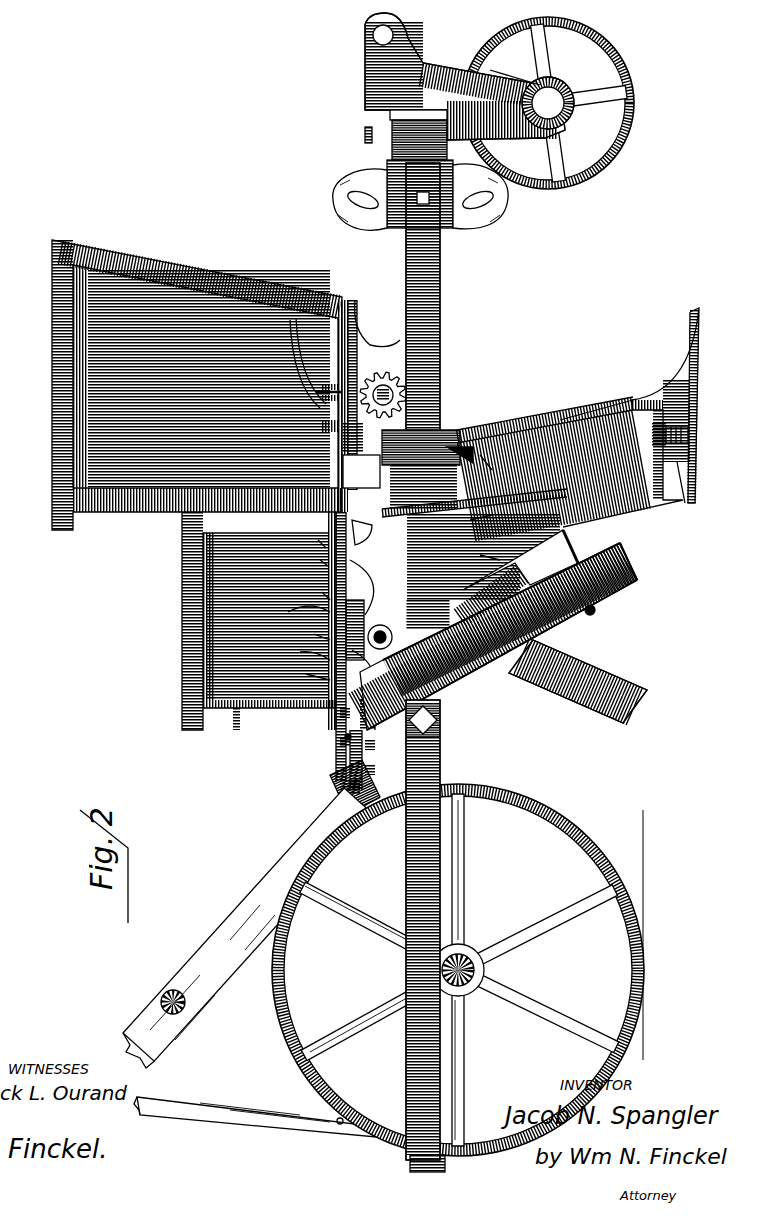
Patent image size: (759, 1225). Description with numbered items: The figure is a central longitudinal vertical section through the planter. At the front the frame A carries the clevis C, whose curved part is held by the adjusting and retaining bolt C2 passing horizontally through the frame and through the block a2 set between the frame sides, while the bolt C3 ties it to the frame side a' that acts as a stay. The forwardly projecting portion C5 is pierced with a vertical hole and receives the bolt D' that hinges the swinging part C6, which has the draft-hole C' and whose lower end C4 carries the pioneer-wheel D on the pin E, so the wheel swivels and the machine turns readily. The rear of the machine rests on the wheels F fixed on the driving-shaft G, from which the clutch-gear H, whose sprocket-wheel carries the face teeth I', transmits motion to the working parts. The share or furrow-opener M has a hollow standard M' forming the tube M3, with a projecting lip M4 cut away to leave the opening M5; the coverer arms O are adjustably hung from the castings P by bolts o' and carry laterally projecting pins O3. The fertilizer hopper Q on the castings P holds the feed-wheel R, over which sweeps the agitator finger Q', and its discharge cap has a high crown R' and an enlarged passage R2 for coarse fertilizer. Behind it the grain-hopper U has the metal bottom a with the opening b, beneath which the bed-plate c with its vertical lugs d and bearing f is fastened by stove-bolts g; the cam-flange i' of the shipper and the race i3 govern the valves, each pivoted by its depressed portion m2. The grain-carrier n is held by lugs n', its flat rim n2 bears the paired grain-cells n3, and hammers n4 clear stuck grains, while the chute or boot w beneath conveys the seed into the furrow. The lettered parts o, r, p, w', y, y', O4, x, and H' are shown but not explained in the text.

The fertilizer hopper Q is at (200, 385).
The agitator finger Q' is at (289, 363).
The bolts o' is at (321, 363).
The feed-wheel R is at (313, 431).
The crown of cap R' is at (307, 405).
The passage of cap R2 is at (320, 388).
The grain-hopper U is at (247, 621).
The grain-carrier n is at (309, 678).
The lugs of grain-carrier n' is at (307, 658).
The rim of grain-carrier n2 is at (313, 637).
The grain-cells n3 is at (315, 564).
The hammers n4 is at (309, 546).
The link y is at (300, 615).
The link pin y' is at (317, 597).
The castings P is at (356, 300).
The teeth of sprocket-wheel I' is at (377, 323).
The bottom of grain-hopper a is at (357, 472).
The bed-plate c is at (356, 591).
The crank disk o is at (377, 589).
The connecting rod r is at (365, 630).
The bracket p is at (350, 740).
The opening in bottom b is at (345, 736).
The clamp plate w' is at (307, 718).
The side of frame a' is at (326, 739).
The race of segment i3 is at (364, 746).
The cam-flange of shipper i' is at (338, 771).
The chute or boot w is at (340, 787).
The vertical lugs of bed-plate d is at (362, 786).
The projecting lip M4 is at (445, 432).
The opening in standard M5 is at (460, 447).
The share or furrow-opener M is at (540, 469).
The tube of standard M3 is at (517, 438).
The standard of share M' is at (489, 444).
The depressed portion of valve m2 is at (481, 530).
The pipe collar O4 is at (490, 559).
The coverer arms O is at (582, 670).
The frame A is at (490, 618).
The pins O3 is at (519, 574).
The set screw x is at (596, 612).
The clutch-gear H is at (255, 971).
The wheels F is at (560, 906).
The bearing of bed-plate f is at (486, 969).
The driving-shaft G is at (441, 265).
The shaft coupling H' is at (438, 720).
The stove-bolts g is at (441, 740).
The pioneer-wheel D is at (548, 103).
The pin E is at (562, 103).
The lower end of clevis C4 is at (548, 130).
The swinging clevis part C6 is at (368, 72).
The draft-hole C' is at (366, 23).
The bolt D' is at (353, 116).
The forwardly-projecting portion C5 is at (390, 138).
The block a2 is at (388, 166).
The clevis C is at (345, 199).
The adjusting and retaining bolt C2 is at (345, 186).
The bolt C3 is at (430, 204).